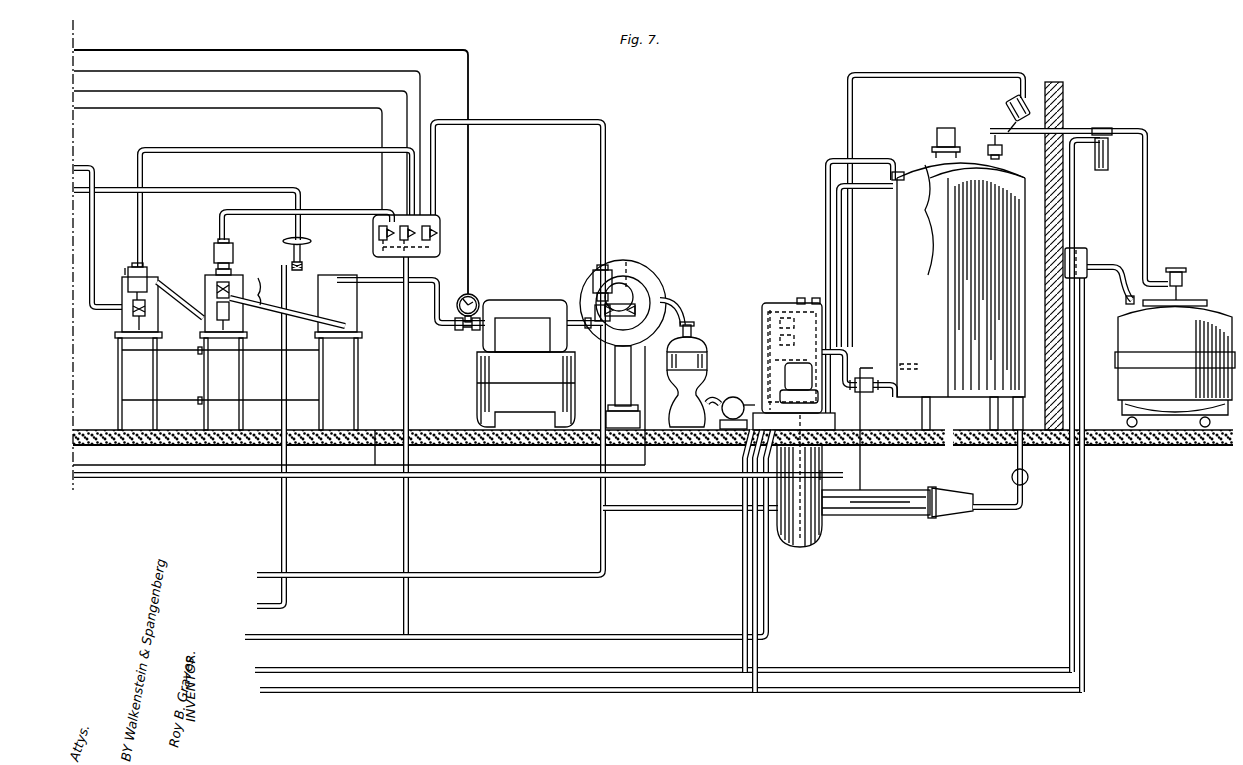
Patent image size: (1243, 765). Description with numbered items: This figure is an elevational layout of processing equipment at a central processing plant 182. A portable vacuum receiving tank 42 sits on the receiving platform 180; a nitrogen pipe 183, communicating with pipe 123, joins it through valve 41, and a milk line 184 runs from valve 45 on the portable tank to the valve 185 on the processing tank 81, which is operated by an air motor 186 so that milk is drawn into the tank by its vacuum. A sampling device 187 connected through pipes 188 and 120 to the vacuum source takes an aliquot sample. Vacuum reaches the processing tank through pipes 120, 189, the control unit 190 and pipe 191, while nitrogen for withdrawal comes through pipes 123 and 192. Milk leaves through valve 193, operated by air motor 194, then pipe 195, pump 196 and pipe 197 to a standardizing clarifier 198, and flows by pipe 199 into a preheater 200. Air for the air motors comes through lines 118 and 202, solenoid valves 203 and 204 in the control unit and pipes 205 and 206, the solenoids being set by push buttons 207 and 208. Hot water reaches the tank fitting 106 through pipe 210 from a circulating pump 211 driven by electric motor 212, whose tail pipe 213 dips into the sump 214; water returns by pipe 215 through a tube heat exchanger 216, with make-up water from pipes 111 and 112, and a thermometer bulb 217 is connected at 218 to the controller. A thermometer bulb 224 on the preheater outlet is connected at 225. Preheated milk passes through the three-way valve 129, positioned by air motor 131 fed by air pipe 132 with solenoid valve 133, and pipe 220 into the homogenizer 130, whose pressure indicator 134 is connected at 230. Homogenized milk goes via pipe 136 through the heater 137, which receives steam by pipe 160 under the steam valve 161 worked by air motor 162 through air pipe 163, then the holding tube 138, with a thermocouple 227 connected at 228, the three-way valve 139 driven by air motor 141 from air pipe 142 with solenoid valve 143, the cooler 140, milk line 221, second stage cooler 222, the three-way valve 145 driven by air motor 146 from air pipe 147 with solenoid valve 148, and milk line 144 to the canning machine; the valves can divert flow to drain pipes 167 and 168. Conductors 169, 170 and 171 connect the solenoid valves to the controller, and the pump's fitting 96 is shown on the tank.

The valve 41 is at (1131, 300).
The portable vacuum receiving tank 42 is at (1124, 334).
The valve 45 is at (1183, 282).
The processing tank 81 is at (995, 235).
The vat fitting 96 is at (936, 130).
The fitting 106 is at (891, 176).
The hot water pipe 111 is at (528, 572).
The pipe 112 is at (682, 515).
The air pipe 118 is at (497, 633).
The pipe 120 is at (617, 668).
The nitrogen pipe 123 is at (629, 692).
The three-way valve 129 is at (605, 300).
The homogenizer 130 is at (507, 302).
The air motor 131 is at (590, 271).
The air pipe 132 is at (606, 150).
The solenoid valve 133 is at (445, 236).
The pressure indicator 134 is at (476, 293).
The pipe 136 is at (437, 338).
The heater 137 is at (340, 297).
The holding tube 138 is at (255, 283).
The three-way valve 139 is at (216, 290).
The cooler 140 is at (243, 323).
The air motor 141 is at (212, 250).
The air pipe 142 is at (322, 188).
The solenoid valve 143 is at (378, 237).
The milk line 144 is at (94, 221).
The three-way valve 145 is at (128, 314).
The air motor 146 is at (149, 275).
The air pipe 147 is at (267, 147).
The solenoid valve 148 is at (414, 272).
The pipe 160 is at (287, 609).
The steam valve 161 is at (297, 346).
The air motor 162 is at (305, 240).
The air pipe 163 is at (228, 188).
The drain pipe 167 is at (222, 352).
The drain pipe 168 is at (118, 350).
The conductor 169 is at (421, 99).
The conductor 170 is at (327, 107).
The conductor 171 is at (362, 92).
The receiving platform 180 is at (1172, 447).
The central processing plant 182 is at (1076, 104).
The nitrogen pipe 183 is at (1085, 560).
The milk line 184 is at (1148, 223).
The valve 185 is at (1003, 148).
The air motor 186 is at (1012, 108).
The sampling device 187 is at (1110, 142).
The pipe 188 is at (1070, 565).
The pipe 189 is at (742, 593).
The control unit 190 is at (763, 305).
The pipe 191 is at (824, 164).
The nitrogen pipe 192 is at (760, 652).
The valve 193 is at (885, 386).
The air motor 194 is at (860, 368).
The pipe 195 is at (870, 408).
The pump 196 is at (733, 398).
The pipe 197 is at (720, 406).
The standardizing clarifier 198 is at (708, 350).
The pipe 199 is at (680, 307).
The preheater 200 is at (658, 287).
The air line 202 is at (772, 592).
The solenoid valve 203 is at (780, 323).
The solenoid valve 204 is at (780, 340).
The pipe 205 is at (852, 262).
The pipe 206 is at (846, 358).
The push button 207 is at (801, 300).
The push button 208 is at (811, 300).
The pipe 210 is at (869, 190).
The circulating pump 211 is at (794, 421).
The electric motor 212 is at (775, 365).
The tail pipe 213 is at (812, 465).
The sump 214 is at (822, 537).
The pipe 215 is at (1017, 456).
The tube heat exchanger 216 is at (880, 492).
The thermometer bulb 217 is at (915, 364).
The connection 218 is at (672, 479).
The pipe 220 is at (577, 328).
The milk line 221 is at (186, 306).
The second stage cooler 222 is at (125, 268).
The thermometer bulb 224 is at (627, 268).
The connection 225 is at (512, 480).
The thermocouple 227 is at (350, 322).
The connection 228 is at (376, 412).
The connection 230 is at (470, 174).